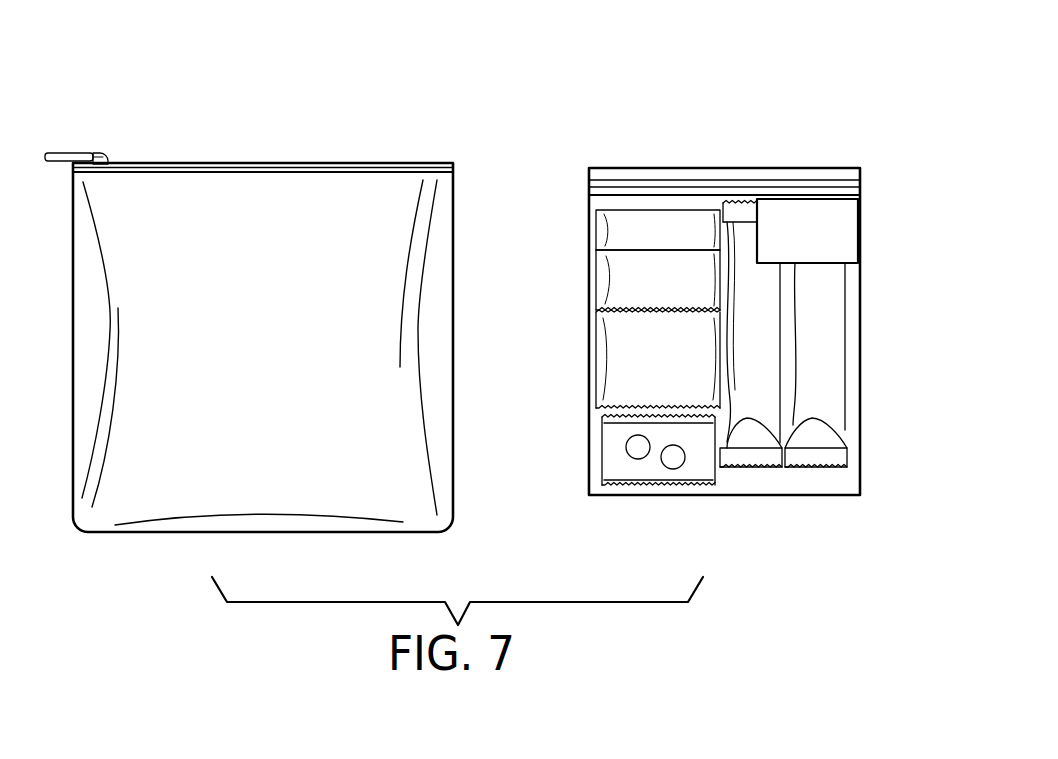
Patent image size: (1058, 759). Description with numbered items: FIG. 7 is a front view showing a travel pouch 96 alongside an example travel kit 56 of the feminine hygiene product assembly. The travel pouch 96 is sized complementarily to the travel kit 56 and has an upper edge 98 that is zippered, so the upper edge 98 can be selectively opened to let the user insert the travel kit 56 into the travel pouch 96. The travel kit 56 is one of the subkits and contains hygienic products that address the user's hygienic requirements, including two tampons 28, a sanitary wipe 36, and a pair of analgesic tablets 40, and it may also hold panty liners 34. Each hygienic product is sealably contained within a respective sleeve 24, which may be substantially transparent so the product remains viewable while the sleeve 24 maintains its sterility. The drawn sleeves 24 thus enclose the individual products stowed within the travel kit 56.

The travel pouch 96 is at (345, 126).
The upper edge 98 is at (293, 167).
The travel kit 56 is at (740, 122).
The panty liners 34 is at (628, 270).
The sanitary wipes 36 is at (627, 353).
The analgesic tablets 40 is at (612, 453).
The tampons 28 is at (758, 318).
The sleeves 24 is at (717, 423).